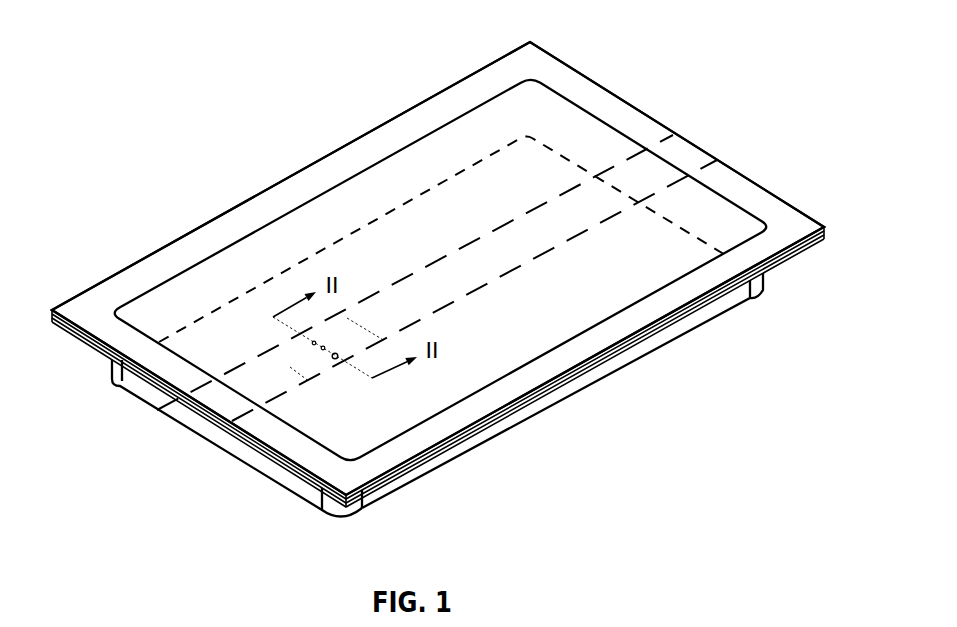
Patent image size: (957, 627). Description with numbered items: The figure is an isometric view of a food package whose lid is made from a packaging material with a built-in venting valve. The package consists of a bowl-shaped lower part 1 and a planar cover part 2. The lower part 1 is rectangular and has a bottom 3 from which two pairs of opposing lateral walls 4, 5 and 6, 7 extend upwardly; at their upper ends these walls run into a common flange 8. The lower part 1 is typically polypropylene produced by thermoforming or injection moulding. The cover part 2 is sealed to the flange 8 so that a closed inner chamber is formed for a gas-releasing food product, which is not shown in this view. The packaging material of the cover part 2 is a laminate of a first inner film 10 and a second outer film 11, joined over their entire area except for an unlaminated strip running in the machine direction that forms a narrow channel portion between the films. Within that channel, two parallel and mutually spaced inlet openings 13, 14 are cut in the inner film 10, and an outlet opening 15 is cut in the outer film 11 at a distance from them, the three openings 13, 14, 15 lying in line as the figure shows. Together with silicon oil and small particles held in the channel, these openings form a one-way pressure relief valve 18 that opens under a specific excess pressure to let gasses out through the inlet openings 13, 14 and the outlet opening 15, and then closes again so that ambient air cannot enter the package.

The lower part 1 is at (728, 345).
The cover part 2 is at (412, 164).
The bottom 3 is at (457, 462).
The lateral wall 4 is at (602, 370).
The lateral wall 5 is at (320, 213).
The lateral wall 6 is at (198, 420).
The lateral wall 7 is at (573, 130).
The flange 8 is at (808, 247).
The inner film 10 is at (800, 237).
The outer film 11 is at (438, 371).
The inlet opening 13 is at (322, 350).
The inlet opening 14 is at (312, 342).
The outlet opening 15 is at (335, 359).
The one-way pressure relief valve 18 is at (251, 347).